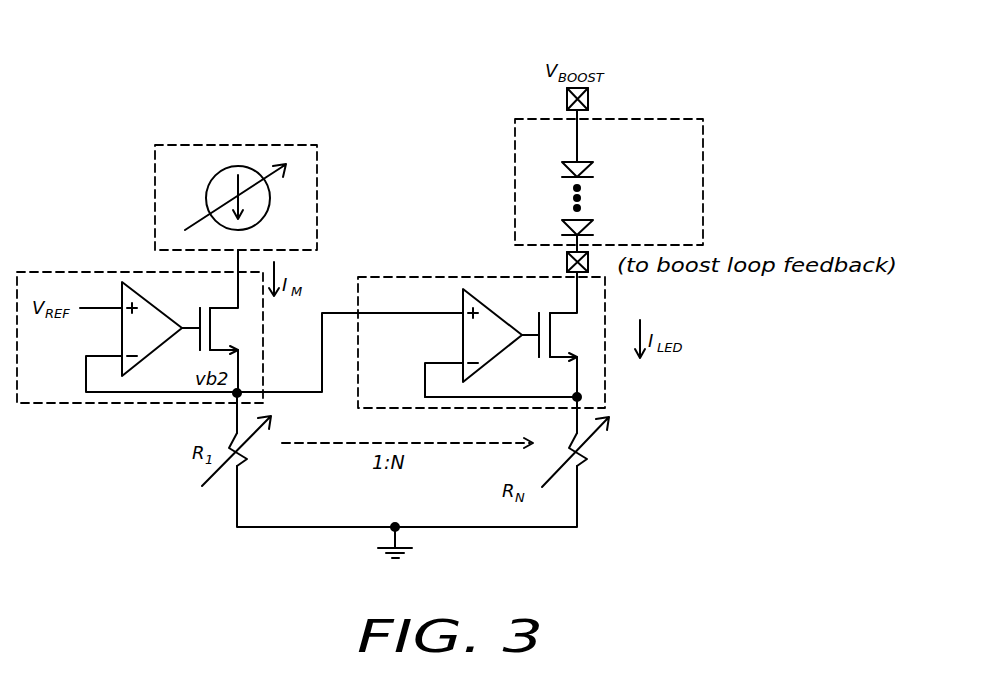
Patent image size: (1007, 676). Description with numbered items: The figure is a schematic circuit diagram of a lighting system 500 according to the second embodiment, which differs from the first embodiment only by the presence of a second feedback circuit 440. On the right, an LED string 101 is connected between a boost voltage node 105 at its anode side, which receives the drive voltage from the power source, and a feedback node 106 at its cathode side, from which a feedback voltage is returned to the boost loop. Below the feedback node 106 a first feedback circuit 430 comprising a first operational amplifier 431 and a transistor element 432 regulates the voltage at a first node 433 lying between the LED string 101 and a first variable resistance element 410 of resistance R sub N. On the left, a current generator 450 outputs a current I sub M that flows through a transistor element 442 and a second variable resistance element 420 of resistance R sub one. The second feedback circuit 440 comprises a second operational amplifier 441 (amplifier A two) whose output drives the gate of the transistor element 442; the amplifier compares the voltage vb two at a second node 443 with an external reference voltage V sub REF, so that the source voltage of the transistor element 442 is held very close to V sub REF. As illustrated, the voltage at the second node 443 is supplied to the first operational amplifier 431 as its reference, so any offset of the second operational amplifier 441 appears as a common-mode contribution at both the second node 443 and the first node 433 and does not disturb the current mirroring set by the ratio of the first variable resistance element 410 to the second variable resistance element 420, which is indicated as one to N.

The lighting system 500 is at (160, 72).
The current generator 450 is at (317, 173).
The second feedback circuit 440 is at (58, 272).
The second operational amplifier 441 is at (122, 343).
The transistor element 442 is at (222, 327).
The second node 443 is at (234, 398).
The second variable resistance element 420 is at (181, 468).
The first variable resistance element 410 is at (594, 457).
The first feedback circuit 430 is at (605, 297).
The first operational amplifier 431 is at (463, 342).
The transistor element 432 is at (577, 338).
The first node 433 is at (495, 397).
The boost voltage node 105 is at (588, 99).
The feedback node 106 is at (567, 262).
The LED string 101 is at (703, 147).